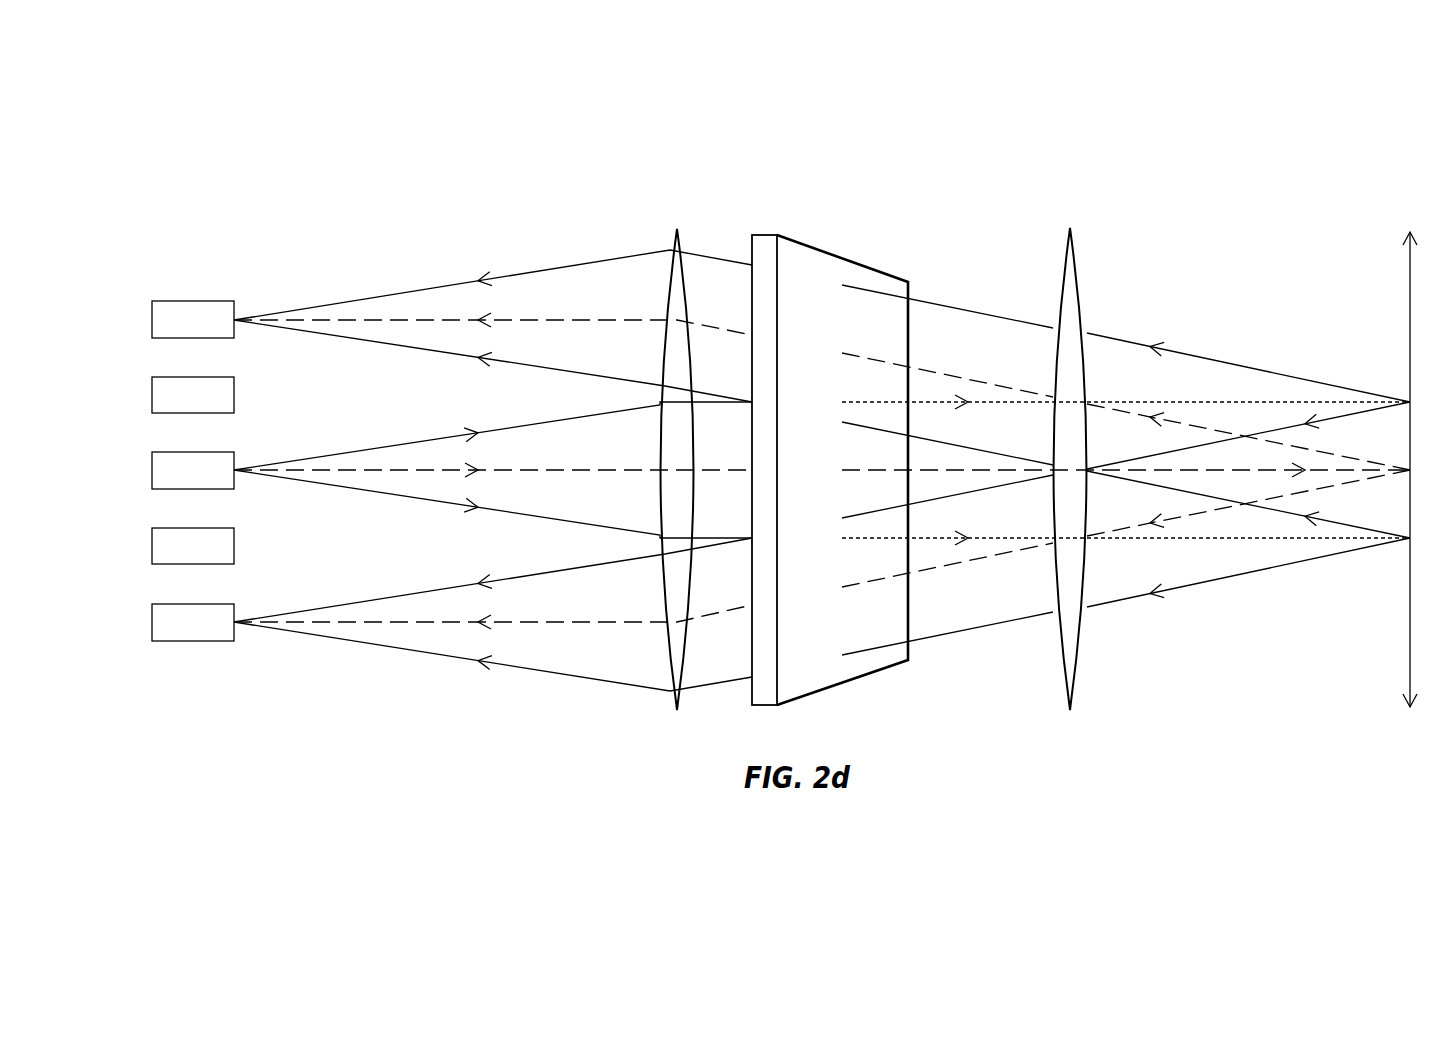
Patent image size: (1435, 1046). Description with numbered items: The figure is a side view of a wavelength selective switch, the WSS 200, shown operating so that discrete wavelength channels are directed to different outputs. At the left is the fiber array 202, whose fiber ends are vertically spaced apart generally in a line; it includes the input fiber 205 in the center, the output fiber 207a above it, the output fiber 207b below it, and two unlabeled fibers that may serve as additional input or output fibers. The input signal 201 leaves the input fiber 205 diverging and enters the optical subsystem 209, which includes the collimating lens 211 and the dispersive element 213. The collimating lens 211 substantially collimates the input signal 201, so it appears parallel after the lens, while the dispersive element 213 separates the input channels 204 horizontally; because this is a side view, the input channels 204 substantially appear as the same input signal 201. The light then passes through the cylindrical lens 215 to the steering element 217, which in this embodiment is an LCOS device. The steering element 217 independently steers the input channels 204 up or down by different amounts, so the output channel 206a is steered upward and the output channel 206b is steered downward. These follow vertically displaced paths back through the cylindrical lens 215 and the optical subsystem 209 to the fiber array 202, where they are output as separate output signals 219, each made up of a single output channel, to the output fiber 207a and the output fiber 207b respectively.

The WSS 200 is at (1293, 182).
The fiber array 202 is at (178, 295).
The output fiber 207a is at (172, 333).
The input fiber 205 is at (177, 484).
The output fiber 207b is at (172, 636).
The output signals 219 is at (365, 320).
The input signal 201 is at (365, 470).
The collimating lens 211 is at (673, 683).
The optical subsystem 209 is at (865, 433).
The dispersive element 213 is at (905, 660).
The input channels 204 is at (945, 470).
The output channel 206a is at (1200, 420).
The output channel 206b is at (1200, 520).
The cylindrical lens 215 is at (1088, 298).
The steering element 217 is at (1409, 651).